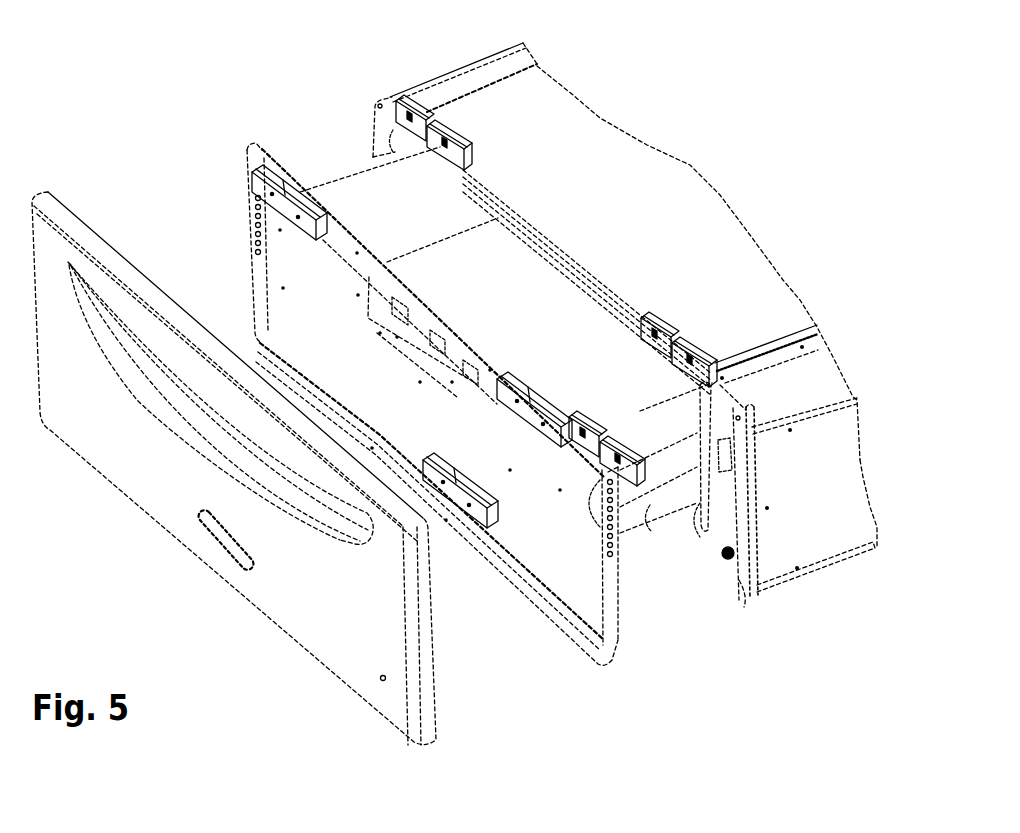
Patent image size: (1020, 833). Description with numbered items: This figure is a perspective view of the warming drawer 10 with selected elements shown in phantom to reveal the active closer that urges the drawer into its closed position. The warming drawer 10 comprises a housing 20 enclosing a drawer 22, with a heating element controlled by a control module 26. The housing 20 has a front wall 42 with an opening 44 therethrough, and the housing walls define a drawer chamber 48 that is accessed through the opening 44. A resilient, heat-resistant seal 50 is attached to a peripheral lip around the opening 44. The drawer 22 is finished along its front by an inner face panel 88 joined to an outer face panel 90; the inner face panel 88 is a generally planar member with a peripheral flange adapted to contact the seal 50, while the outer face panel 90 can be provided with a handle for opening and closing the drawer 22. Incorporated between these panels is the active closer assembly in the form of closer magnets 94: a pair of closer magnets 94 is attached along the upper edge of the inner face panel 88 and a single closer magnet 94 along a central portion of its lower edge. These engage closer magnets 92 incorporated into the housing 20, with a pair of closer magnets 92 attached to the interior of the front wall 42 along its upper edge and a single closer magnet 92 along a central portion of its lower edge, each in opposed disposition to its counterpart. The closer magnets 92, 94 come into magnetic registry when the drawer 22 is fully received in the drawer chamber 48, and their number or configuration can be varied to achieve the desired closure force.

The warming drawer 10 is at (335, 47).
The housing 20 is at (633, 168).
The drawer 22 is at (321, 183).
The control module 26 is at (818, 550).
The front wall 42 is at (723, 513).
The opening 44 is at (676, 528).
The drawer chamber 48 is at (553, 284).
The seal 50 is at (685, 530).
The inner face panel 88 is at (283, 267).
The outer face panel 90 is at (270, 580).
The closer magnets 92 is at (424, 108).
The closer magnets 94 is at (268, 190).